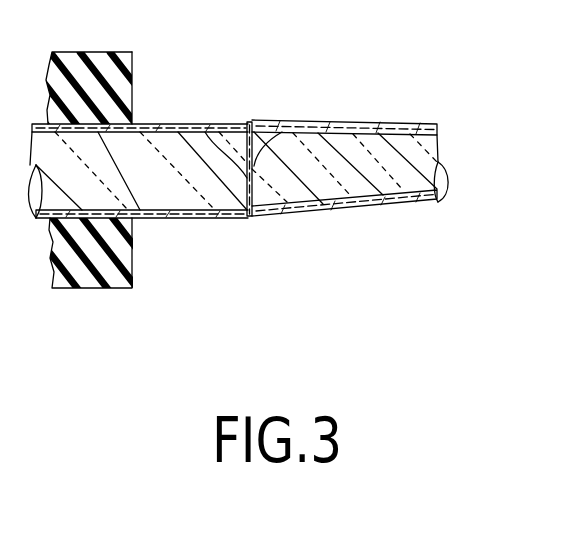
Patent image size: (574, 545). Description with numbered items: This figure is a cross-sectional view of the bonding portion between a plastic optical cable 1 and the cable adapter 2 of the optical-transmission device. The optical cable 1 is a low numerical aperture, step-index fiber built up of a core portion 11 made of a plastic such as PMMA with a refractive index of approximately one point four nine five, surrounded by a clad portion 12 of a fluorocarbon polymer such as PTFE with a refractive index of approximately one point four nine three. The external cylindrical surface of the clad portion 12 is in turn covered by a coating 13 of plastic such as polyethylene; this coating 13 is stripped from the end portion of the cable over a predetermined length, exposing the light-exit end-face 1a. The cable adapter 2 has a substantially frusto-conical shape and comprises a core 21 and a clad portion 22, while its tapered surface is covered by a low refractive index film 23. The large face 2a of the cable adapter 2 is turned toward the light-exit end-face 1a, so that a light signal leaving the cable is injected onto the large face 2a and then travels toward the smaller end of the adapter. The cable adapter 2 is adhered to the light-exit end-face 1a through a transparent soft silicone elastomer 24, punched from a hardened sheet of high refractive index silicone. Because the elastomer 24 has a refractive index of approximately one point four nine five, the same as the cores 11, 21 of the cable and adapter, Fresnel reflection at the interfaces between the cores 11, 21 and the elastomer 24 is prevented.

The plastic optical cable 1 is at (149, 181).
The light-exit end-face 1a is at (199, 123).
The core portion 11 is at (186, 205).
The clad portion 12 is at (227, 219).
The coating 13 is at (103, 289).
The cable adapter 2 is at (365, 178).
The large face 2a is at (284, 120).
The core 21 is at (347, 205).
The clad portion 22 is at (428, 201).
The low refractive index film 23 is at (388, 121).
The transparent soft silicone elastomer 24 is at (249, 120).